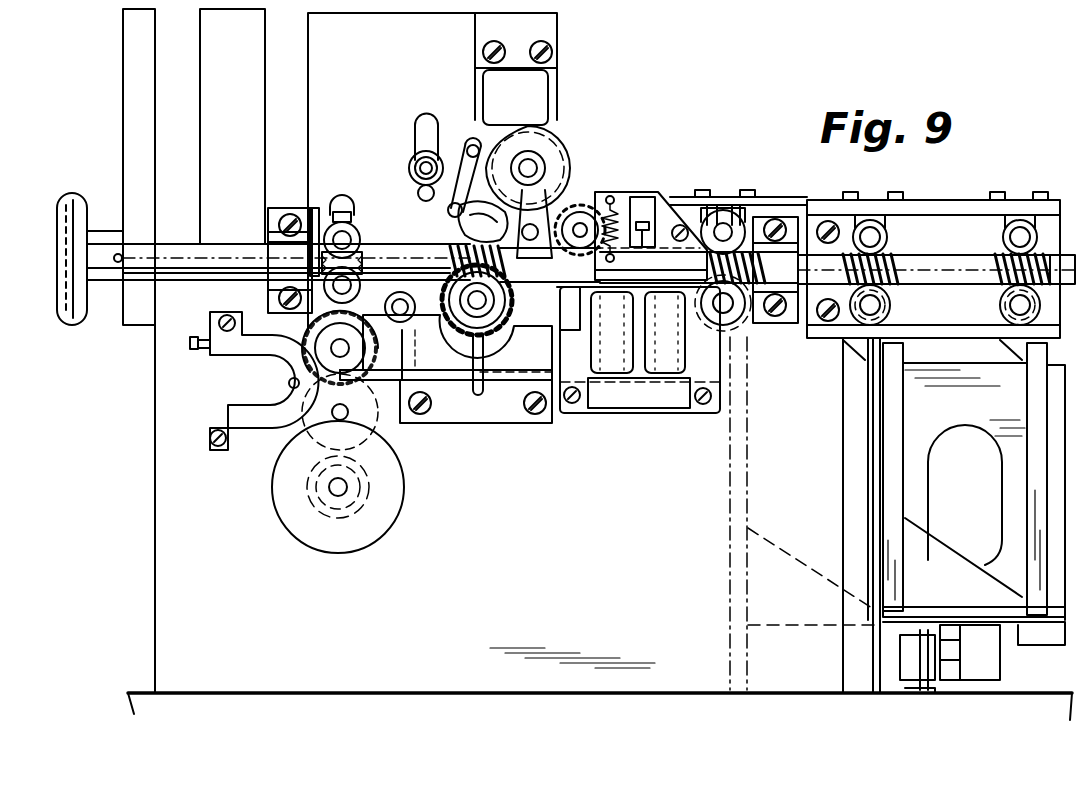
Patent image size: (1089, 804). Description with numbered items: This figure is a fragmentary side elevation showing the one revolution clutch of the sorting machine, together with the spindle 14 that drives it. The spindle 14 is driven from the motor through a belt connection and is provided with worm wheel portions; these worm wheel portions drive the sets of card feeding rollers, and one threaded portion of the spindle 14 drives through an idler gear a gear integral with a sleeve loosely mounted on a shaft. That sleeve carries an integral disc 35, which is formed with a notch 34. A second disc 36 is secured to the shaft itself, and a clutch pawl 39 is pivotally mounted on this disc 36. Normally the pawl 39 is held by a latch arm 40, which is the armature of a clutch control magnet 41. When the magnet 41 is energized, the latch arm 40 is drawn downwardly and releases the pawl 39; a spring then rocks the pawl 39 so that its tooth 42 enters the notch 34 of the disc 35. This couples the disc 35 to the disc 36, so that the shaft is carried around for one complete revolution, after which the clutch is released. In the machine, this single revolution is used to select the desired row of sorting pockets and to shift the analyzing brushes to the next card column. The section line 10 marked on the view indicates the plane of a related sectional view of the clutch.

The section line 10 is at (524, 88).
The spindle 14 is at (948, 255).
The notch 34 is at (470, 140).
The disc 35 is at (560, 135).
The disc 36 is at (550, 173).
The clutch pawl 39 is at (472, 218).
The latch arm 40 is at (655, 262).
The magnet 41 is at (668, 355).
The tooth 42 is at (418, 196).